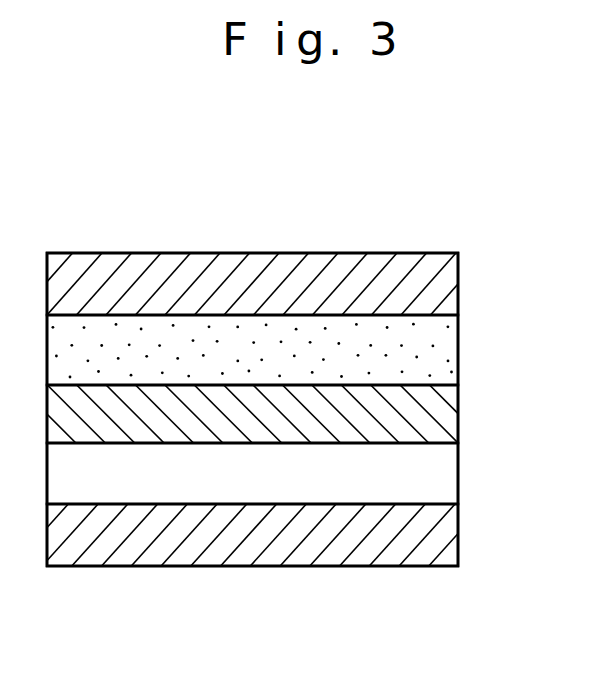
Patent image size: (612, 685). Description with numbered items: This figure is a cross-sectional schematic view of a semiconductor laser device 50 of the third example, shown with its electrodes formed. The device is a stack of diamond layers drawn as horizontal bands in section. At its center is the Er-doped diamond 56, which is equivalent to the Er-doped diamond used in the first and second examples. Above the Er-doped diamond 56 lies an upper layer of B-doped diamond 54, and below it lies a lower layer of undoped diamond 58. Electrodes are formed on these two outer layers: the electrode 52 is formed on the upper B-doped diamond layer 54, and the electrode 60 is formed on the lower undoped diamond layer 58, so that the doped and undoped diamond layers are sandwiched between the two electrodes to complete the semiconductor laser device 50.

The semiconductor laser device 50 is at (149, 247).
The electrode 52 is at (458, 534).
The B-doped diamond 54 is at (458, 473).
The Er-doped diamond 56 is at (458, 414).
The undoped diamond 58 is at (458, 348).
The electrode 60 is at (458, 283).